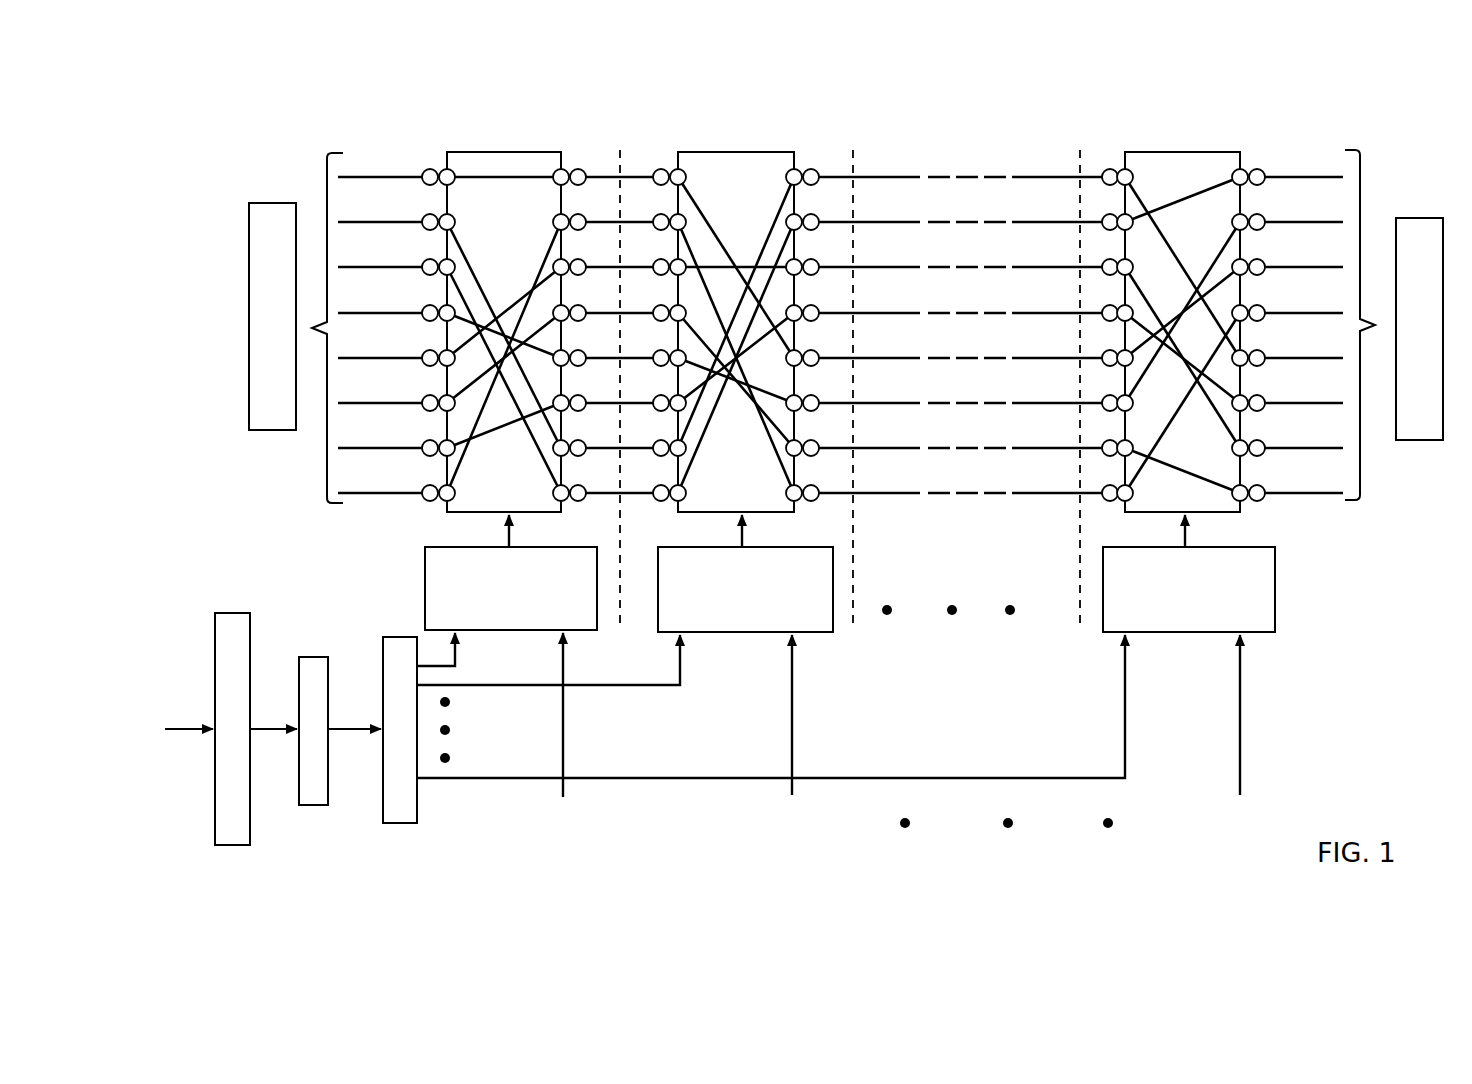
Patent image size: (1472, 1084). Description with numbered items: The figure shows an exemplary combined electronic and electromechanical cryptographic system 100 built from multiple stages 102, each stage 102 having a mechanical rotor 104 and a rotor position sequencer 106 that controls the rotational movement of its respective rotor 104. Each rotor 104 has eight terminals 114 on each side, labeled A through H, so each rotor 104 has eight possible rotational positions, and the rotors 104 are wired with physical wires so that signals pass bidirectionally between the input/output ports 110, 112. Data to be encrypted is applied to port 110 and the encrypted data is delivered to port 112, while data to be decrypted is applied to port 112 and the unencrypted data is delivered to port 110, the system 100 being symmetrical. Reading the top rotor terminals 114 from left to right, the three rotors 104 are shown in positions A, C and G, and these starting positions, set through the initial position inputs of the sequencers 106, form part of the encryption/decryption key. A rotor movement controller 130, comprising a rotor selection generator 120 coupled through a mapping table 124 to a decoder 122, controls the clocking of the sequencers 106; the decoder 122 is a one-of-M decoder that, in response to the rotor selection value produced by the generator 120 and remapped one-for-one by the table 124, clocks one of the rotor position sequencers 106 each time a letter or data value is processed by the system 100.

The cryptographic system 100 is at (764, 487).
The stage 102 is at (867, 414).
The rotor 104 is at (1192, 152).
The rotor position sequencer 106 is at (491, 630).
The input/output port 110 is at (322, 467).
The input/output port 112 is at (1367, 452).
The terminals 114 is at (440, 168).
The rotor selection generator 120 is at (243, 610).
The decoder 122 is at (391, 636).
The mapping table 124 is at (311, 807).
The rotor movement controller 130 is at (247, 705).